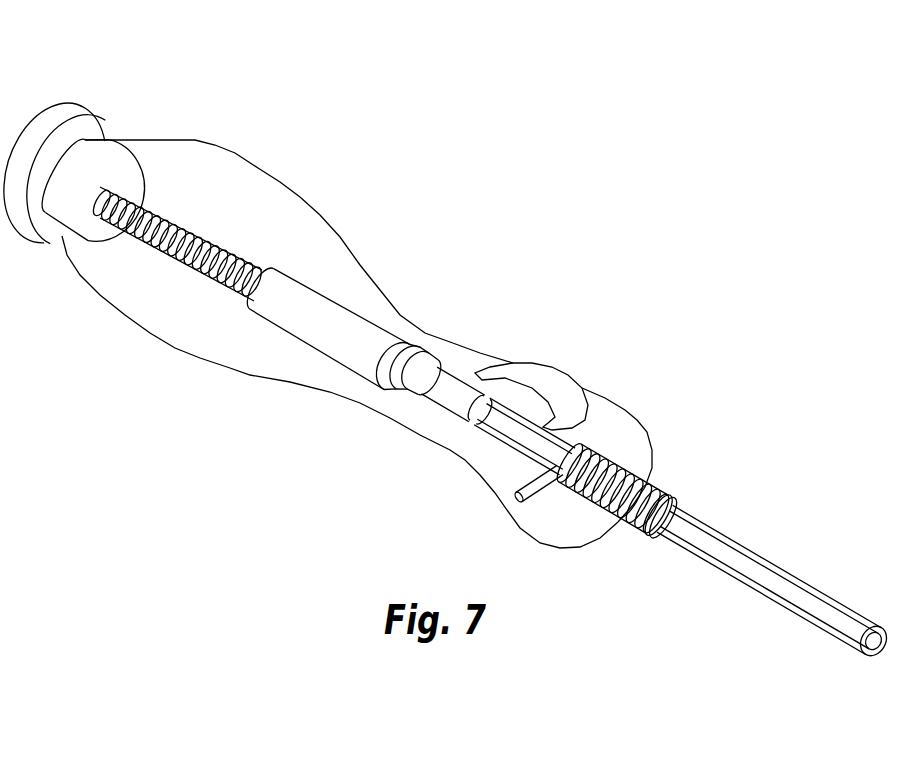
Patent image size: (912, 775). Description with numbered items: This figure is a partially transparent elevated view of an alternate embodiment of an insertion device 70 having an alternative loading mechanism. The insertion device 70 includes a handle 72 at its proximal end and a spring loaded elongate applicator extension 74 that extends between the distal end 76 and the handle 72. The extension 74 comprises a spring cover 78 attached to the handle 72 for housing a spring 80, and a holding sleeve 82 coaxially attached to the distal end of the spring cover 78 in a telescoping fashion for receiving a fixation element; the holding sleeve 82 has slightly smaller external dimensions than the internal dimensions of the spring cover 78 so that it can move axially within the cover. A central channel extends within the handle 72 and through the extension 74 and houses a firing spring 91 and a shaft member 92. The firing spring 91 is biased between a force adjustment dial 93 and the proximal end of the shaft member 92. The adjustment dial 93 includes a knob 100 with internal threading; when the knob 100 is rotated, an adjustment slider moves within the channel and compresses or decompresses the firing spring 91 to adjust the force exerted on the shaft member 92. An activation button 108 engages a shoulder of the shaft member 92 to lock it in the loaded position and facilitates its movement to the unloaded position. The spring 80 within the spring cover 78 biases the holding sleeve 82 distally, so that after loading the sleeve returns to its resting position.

The insertion device 70 is at (515, 230).
The handle 72 is at (280, 182).
The elongate applicator extension 74 is at (739, 519).
The distal end 76 is at (860, 661).
The spring cover 78 is at (633, 423).
The spring 80 is at (618, 523).
The holding sleeve 82 is at (772, 597).
The firing spring 91 is at (163, 345).
The shaft member 92 is at (290, 382).
The force adjustment dial 93 is at (108, 116).
The knob 100 is at (62, 133).
The activation button 108 is at (543, 378).